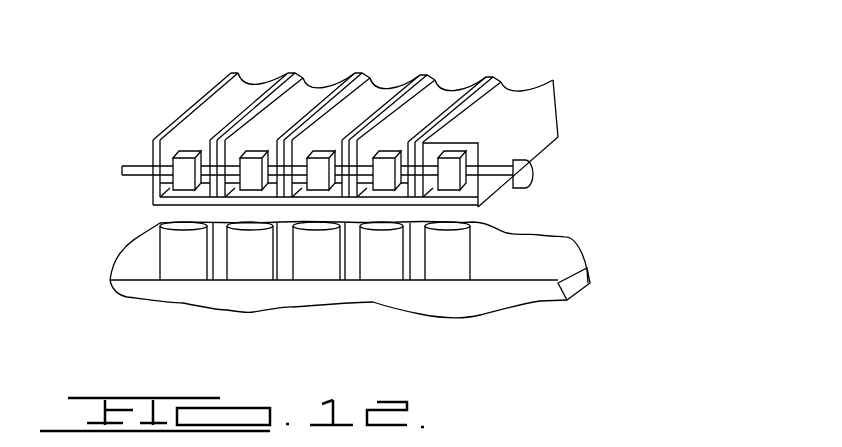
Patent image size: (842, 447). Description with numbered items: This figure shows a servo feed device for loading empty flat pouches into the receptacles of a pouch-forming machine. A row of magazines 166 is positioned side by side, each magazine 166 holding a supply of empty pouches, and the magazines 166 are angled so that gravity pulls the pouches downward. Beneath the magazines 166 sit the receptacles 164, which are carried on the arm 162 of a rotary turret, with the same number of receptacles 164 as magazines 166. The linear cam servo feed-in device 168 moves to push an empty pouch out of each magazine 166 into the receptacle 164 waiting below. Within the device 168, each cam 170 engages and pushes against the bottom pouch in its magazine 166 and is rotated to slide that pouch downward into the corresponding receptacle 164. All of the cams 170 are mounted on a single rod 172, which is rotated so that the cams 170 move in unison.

The arm 162 is at (215, 290).
The receptacles 164 is at (447, 262).
The magazines 166 is at (305, 86).
The linear cam servo feed-in device 168 is at (391, 122).
The cams 170 is at (177, 167).
The rod 172 is at (143, 178).